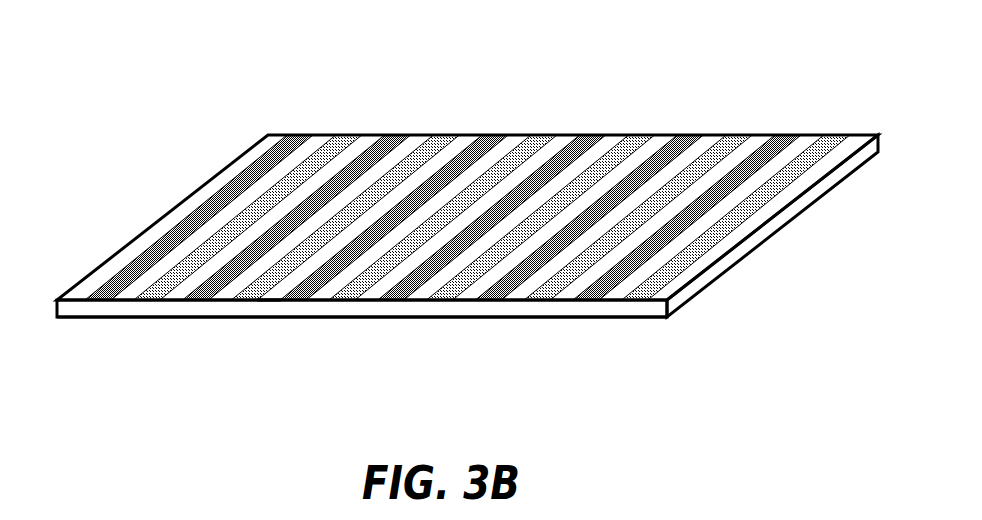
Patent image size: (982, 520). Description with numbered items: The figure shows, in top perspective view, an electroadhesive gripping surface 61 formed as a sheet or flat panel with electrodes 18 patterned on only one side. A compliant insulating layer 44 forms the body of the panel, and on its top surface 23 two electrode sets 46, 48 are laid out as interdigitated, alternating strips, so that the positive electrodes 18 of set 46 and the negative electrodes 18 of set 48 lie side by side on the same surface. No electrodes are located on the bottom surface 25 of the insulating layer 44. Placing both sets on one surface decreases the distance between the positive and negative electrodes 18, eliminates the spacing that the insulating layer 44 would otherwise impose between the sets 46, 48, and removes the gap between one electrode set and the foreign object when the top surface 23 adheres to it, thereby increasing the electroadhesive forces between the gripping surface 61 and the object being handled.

The electroadhesive gripping surface 61 is at (459, 238).
The electrodes 18 is at (467, 230).
The electrode set 46 is at (380, 143).
The electrode set 48 is at (357, 138).
The top surface 23 is at (262, 300).
The compliant insulating layer 44 is at (220, 308).
The bottom surface 25 is at (318, 318).